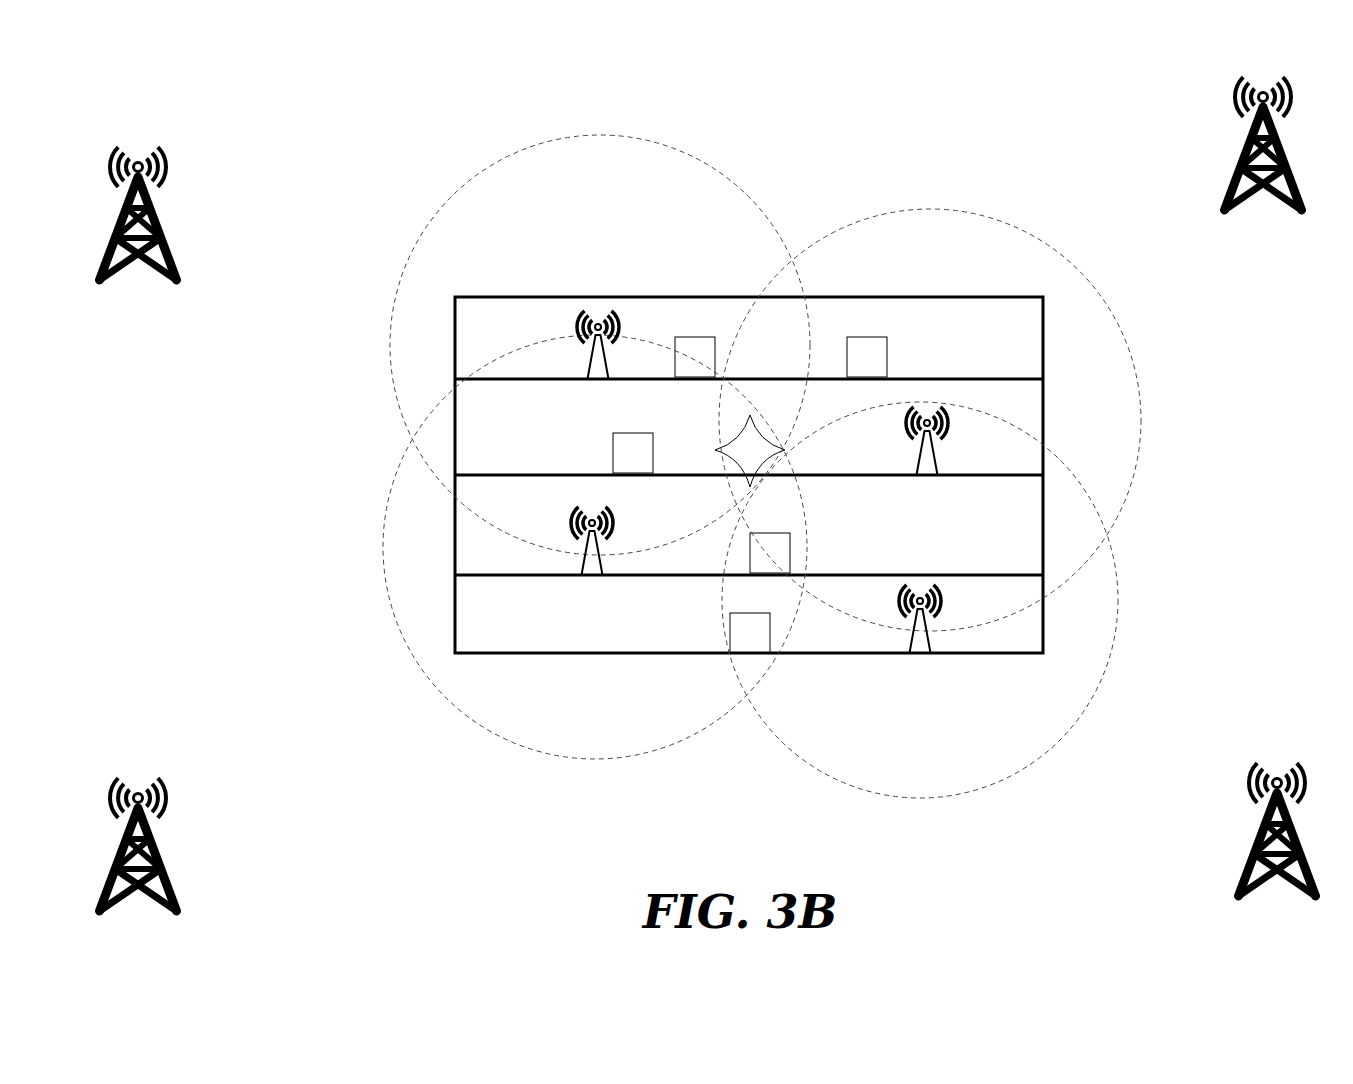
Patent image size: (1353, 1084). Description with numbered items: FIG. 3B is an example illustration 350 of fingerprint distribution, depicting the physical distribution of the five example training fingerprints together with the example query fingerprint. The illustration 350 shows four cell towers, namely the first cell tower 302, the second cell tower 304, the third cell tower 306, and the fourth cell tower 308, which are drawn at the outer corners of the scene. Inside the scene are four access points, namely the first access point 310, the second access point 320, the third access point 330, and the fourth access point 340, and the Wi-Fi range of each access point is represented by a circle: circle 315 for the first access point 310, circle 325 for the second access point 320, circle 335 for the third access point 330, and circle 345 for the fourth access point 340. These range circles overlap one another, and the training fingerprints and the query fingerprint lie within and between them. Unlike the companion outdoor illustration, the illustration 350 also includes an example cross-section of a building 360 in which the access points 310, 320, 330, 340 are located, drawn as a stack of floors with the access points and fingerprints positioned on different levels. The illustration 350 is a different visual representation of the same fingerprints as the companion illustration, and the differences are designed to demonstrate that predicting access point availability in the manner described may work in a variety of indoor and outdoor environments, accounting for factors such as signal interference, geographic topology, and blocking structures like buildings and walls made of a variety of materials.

The illustration 350 is at (148, 107).
The Cell_1 302 is at (172, 197).
The Cell_2 304 is at (1238, 822).
The Cell_3 306 is at (1222, 155).
The Cell_4 308 is at (170, 832).
The AP1 310 is at (577, 357).
The AP2 320 is at (927, 410).
The AP3 330 is at (570, 553).
The AP4 340 is at (897, 632).
The circle 315 is at (393, 345).
The circle 325 is at (1140, 422).
The circle 335 is at (387, 547).
The circle 345 is at (1118, 598).
The building 360 is at (747, 295).